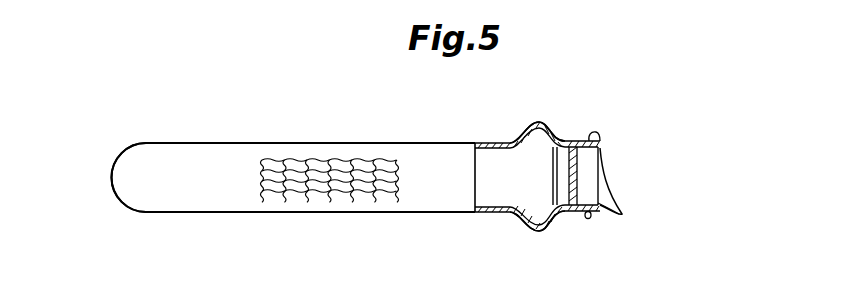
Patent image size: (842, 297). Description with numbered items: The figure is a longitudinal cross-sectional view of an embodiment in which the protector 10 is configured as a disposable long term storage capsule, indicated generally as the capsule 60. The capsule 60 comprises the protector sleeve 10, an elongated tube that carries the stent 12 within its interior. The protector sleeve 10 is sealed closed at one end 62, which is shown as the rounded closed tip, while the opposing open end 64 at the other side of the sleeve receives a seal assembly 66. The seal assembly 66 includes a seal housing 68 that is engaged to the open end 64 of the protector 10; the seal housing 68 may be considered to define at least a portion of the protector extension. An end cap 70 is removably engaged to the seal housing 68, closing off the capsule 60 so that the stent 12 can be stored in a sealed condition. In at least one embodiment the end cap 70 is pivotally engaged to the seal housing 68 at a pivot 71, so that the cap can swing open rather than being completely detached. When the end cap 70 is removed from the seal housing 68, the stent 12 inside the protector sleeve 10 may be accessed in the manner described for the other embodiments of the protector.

The protector 10 is at (166, 194).
The stent 12 is at (345, 159).
The capsule 60 is at (546, 166).
The sealed end 62 is at (113, 167).
The open end 64 is at (476, 188).
The seal assembly 66 is at (551, 130).
The seal housing 68 is at (517, 142).
The end cap 70 is at (603, 199).
The pivot 71 is at (599, 136).